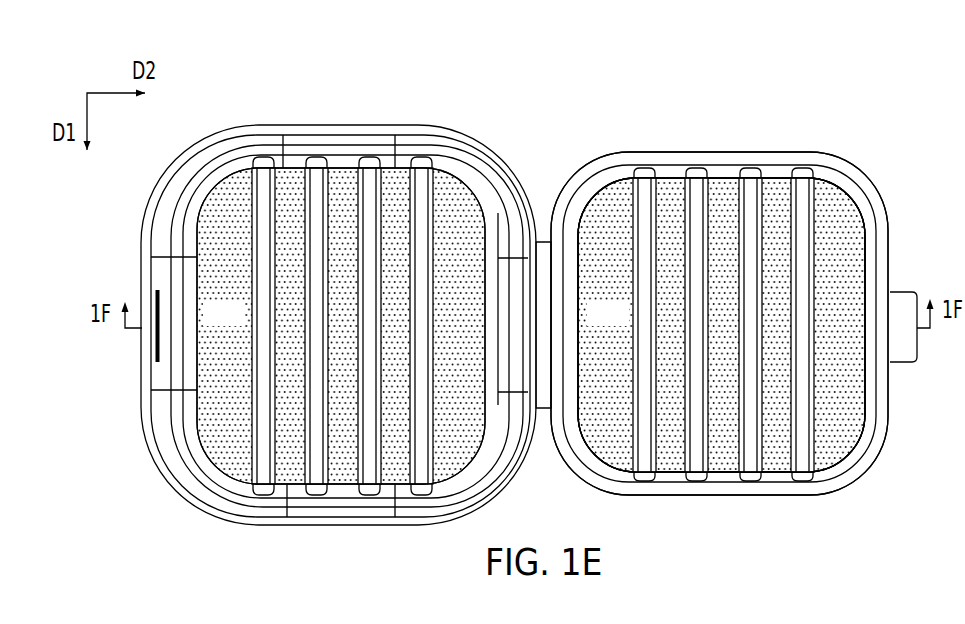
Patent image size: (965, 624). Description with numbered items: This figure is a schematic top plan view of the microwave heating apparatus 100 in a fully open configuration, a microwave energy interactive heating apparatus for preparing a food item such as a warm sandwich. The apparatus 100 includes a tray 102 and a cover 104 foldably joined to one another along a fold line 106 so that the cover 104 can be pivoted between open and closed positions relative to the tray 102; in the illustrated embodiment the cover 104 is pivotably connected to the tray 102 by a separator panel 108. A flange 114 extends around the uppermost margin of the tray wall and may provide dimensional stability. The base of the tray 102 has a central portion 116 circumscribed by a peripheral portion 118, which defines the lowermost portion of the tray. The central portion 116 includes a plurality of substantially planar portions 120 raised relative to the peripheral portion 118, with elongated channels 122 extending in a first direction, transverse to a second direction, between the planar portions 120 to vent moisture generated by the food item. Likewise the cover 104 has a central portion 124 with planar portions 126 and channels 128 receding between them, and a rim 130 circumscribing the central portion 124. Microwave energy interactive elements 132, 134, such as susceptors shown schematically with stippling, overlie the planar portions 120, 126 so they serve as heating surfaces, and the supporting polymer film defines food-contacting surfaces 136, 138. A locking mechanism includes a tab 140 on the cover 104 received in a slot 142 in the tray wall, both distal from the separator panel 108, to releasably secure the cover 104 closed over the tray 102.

The microwave heating apparatus 100 is at (906, 99).
The tray 102 is at (305, 108).
The cover 104 is at (726, 114).
The fold line 106 is at (536, 368).
The separator panel 108 is at (540, 240).
The flange 114 is at (150, 440).
The central portion 116 is at (219, 175).
The peripheral portion 118 is at (452, 165).
The planar portions 120 is at (343, 185).
The channels 122 is at (420, 180).
The central portion 124 is at (840, 190).
The planar portions 126 is at (672, 188).
The channels 128 is at (803, 188).
The rim 130 is at (885, 250).
The microwave energy interactive element 132 is at (203, 228).
The microwave energy interactive element 134 is at (843, 208).
The food-contacting surface 136 is at (242, 323).
The second cavity floor 138 is at (626, 323).
The tab 140 is at (907, 352).
The slot 142 is at (156, 352).